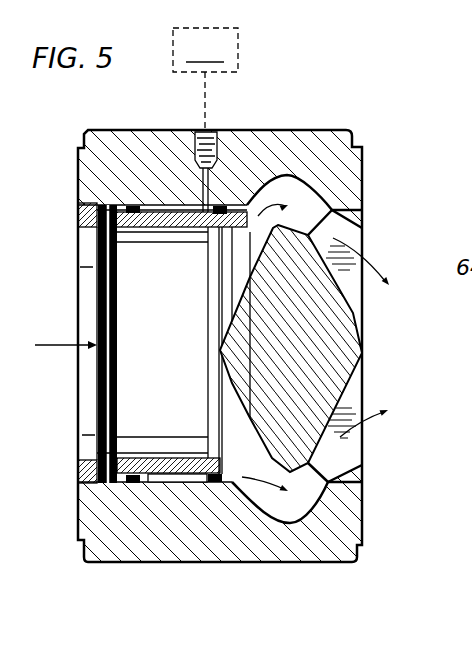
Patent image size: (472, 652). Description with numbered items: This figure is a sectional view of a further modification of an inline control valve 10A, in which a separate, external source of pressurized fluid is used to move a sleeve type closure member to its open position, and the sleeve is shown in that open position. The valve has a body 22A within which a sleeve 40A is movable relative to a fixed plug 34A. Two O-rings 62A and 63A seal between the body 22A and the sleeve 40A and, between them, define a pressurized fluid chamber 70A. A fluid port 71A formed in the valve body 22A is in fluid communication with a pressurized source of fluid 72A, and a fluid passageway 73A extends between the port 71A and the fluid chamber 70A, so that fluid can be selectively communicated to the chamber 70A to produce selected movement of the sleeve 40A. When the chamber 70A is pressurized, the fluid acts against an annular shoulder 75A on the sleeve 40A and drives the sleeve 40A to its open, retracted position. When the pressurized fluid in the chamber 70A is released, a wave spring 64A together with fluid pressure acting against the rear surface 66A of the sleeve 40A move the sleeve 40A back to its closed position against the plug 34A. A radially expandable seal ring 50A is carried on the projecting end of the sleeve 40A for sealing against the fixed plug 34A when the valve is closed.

The control valve 10A is at (350, 125).
The valve body 22A is at (351, 173).
The plug 34A is at (340, 338).
The sleeve 40A is at (147, 207).
The seal ring 50A is at (233, 223).
The O-ring 62A is at (223, 486).
The O-ring 63A is at (132, 487).
The wave spring 64A is at (78, 475).
The rear surface 66A is at (115, 441).
The pressurized fluid chamber 70A is at (182, 217).
The fluid port 71A is at (216, 131).
The pressurized source of fluid 72A is at (205, 80).
The fluid passageway 73A is at (218, 185).
The annular shoulder 75A is at (160, 223).